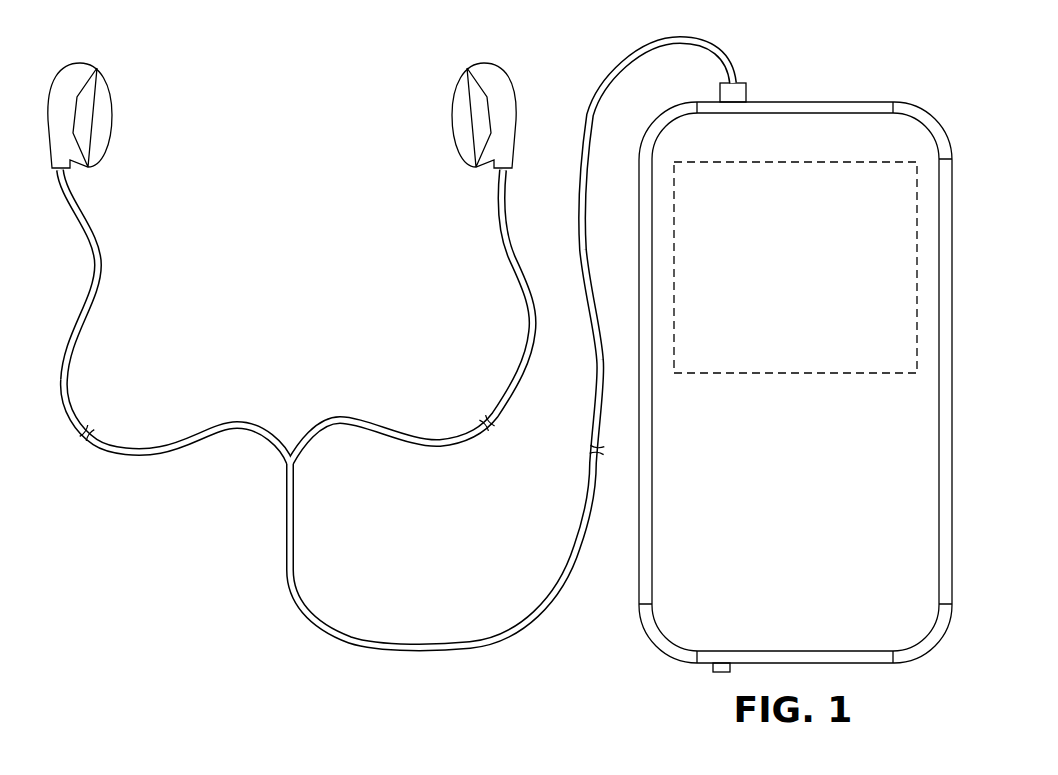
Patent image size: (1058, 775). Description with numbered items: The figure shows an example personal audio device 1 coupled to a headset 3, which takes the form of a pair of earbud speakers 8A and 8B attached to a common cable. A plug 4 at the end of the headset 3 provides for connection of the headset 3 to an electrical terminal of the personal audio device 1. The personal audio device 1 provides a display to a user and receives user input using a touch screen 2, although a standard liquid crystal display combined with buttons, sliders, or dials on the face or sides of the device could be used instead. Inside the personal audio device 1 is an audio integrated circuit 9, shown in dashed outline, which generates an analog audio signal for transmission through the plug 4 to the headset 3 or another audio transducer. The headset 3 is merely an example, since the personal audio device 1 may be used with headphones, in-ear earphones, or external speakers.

The personal audio device 1 is at (877, 101).
The touch screen 2 is at (786, 592).
The headset 3 is at (237, 423).
The plug 4 is at (748, 88).
The earbud speaker 8A is at (478, 62).
The earbud speaker 8B is at (82, 62).
The audio integrated circuit 9 is at (815, 373).